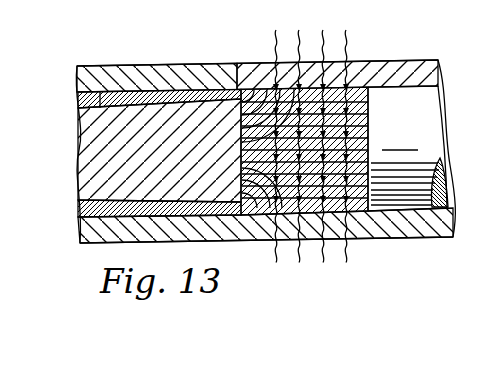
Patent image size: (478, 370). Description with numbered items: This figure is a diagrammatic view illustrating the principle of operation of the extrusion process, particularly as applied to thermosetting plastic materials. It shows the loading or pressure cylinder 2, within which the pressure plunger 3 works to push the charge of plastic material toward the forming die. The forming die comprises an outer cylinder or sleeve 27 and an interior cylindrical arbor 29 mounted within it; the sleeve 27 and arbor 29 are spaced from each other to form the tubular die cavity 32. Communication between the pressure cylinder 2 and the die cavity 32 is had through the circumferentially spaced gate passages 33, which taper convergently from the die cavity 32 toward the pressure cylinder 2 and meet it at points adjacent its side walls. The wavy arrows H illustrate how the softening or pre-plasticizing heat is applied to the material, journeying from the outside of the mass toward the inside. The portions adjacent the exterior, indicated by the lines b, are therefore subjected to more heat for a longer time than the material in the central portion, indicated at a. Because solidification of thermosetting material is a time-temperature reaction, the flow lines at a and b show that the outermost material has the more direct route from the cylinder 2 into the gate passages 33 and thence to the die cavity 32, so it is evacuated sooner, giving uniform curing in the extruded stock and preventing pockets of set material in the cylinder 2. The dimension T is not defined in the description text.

The pressure cylinder 2 is at (387, 67).
The pressure plunger 3 is at (407, 148).
The outer cylinder or sleeve 27 is at (128, 74).
The cylindrical arbor 29 is at (83, 148).
The tubular die cavity 32 is at (79, 100).
The gate passages 33 is at (231, 90).
The thickness of barrier layer T is at (100, 92).
The wavy arrows H is at (327, 264).
The central portion flow lines a is at (370, 157).
The outer portion flow lines b is at (370, 99).